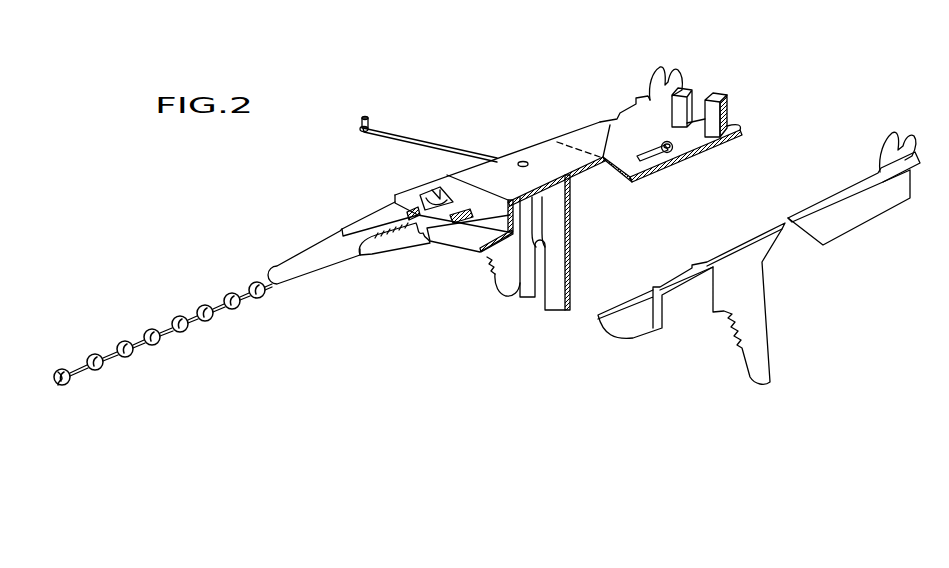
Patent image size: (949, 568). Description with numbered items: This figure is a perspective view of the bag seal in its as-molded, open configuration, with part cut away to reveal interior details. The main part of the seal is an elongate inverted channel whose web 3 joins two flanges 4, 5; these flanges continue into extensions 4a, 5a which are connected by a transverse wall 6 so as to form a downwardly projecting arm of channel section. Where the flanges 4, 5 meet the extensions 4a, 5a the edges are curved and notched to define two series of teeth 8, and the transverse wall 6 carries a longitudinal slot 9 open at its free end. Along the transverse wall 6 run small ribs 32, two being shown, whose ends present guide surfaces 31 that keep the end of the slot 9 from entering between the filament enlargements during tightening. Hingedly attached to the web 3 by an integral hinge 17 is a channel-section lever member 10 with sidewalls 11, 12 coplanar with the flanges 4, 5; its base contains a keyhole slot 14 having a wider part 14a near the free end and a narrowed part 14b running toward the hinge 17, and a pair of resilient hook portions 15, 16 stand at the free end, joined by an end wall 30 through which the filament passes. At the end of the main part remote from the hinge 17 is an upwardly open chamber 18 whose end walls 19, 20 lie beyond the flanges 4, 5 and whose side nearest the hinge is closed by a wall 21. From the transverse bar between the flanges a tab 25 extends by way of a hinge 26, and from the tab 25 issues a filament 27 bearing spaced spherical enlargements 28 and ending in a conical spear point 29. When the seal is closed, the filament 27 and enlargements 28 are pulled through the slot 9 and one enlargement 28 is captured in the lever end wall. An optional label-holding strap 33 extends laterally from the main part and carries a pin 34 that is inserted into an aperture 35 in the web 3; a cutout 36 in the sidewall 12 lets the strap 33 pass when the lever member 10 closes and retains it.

The web 3 is at (505, 170).
The flange 4 is at (747, 280).
The extension 4a is at (760, 354).
The flange 5 is at (490, 276).
The extension 5a is at (508, 284).
The transverse wall 6 is at (575, 218).
The teeth 8 is at (487, 271).
The longitudinal slot 9 is at (545, 290).
The lever member 10 is at (630, 66).
The sidewall 11 is at (858, 210).
The sidewall 12 is at (580, 138).
The keyhole slot 14 is at (775, 164).
The wider part 14a is at (690, 153).
The narrowed part 14b is at (662, 162).
The resilient hook portion 15 is at (907, 140).
The resilient hook portion 16 is at (675, 73).
The integral hinge 17 is at (608, 167).
The chamber 18 is at (463, 200).
The end wall 19 is at (675, 275).
The end wall 20 is at (442, 190).
The wall 21 is at (492, 221).
The tab 25 is at (307, 262).
The hinge 26 is at (394, 203).
The filament 27 is at (242, 290).
The spherical enlargements 28 is at (205, 306).
The conical spear point 29 is at (695, 105).
The end wall 30 is at (717, 115).
The guide surface 31 is at (530, 244).
The rib 32 is at (543, 227).
The label-holding strap 33 is at (450, 128).
The pin 34 is at (361, 124).
The aperture 35 is at (525, 161).
The cutout 36 is at (620, 117).